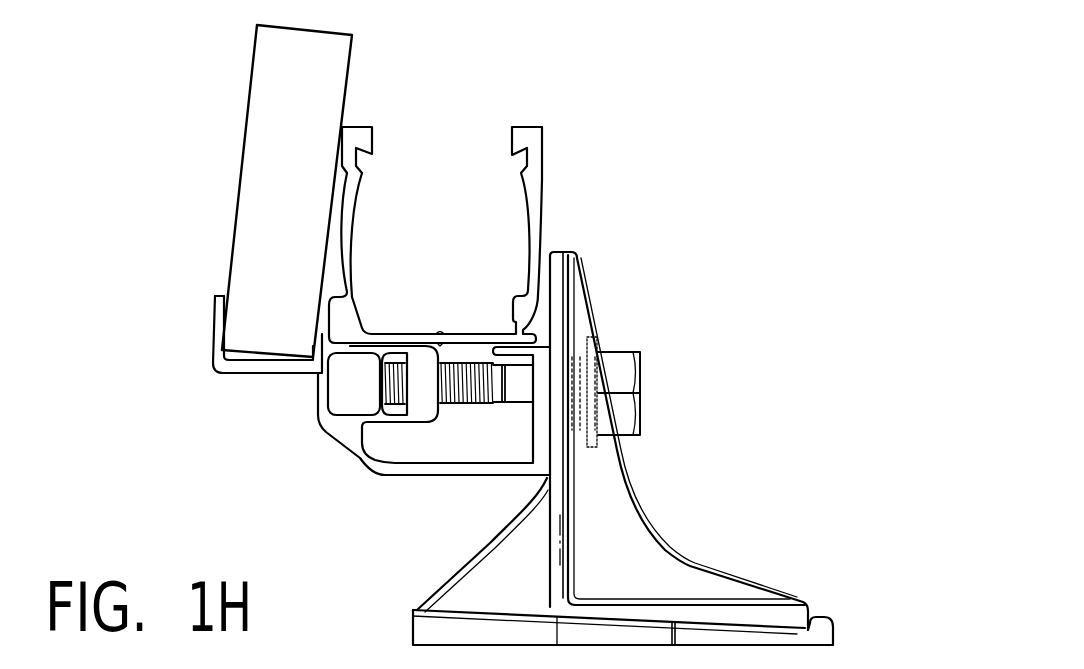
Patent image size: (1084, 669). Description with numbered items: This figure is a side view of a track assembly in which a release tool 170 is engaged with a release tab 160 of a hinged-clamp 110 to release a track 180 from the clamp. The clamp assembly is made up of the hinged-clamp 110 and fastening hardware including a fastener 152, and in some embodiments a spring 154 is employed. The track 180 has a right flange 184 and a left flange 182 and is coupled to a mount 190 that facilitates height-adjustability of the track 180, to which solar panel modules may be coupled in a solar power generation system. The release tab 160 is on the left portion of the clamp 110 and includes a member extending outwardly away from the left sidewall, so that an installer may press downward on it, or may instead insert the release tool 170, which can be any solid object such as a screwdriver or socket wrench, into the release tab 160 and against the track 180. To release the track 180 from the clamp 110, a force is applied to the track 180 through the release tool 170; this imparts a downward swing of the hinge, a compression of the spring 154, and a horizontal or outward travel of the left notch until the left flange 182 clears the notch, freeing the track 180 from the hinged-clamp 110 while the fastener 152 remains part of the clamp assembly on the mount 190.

The hinged-clamp 110 is at (472, 527).
The fastener 152 is at (640, 362).
The spring 154 is at (597, 481).
The release tab 160 is at (151, 356).
The release tool 170 is at (245, 105).
The track 180 is at (540, 187).
The left flange 182 is at (352, 335).
The right flange 184 is at (533, 340).
The mount 190 is at (772, 542).